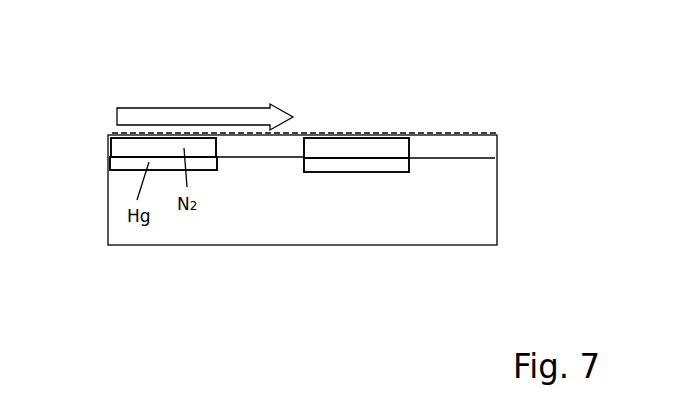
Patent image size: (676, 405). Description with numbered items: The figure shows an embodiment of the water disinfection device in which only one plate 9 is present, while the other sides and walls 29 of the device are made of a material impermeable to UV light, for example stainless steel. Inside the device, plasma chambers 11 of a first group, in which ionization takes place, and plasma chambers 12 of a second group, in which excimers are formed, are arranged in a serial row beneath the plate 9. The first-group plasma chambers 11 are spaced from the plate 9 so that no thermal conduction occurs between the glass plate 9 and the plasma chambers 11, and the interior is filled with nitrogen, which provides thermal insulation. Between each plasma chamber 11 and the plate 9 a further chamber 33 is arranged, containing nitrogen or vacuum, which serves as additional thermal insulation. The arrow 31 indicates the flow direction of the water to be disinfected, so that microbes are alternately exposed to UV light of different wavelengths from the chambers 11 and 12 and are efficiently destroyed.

The plate 9 is at (367, 133).
The plasma chamber 11 is at (120, 163).
The plasma chamber 12 is at (293, 147).
The walls 29 is at (497, 191).
The arrow 31 is at (216, 120).
The further chamber 33 is at (152, 143).